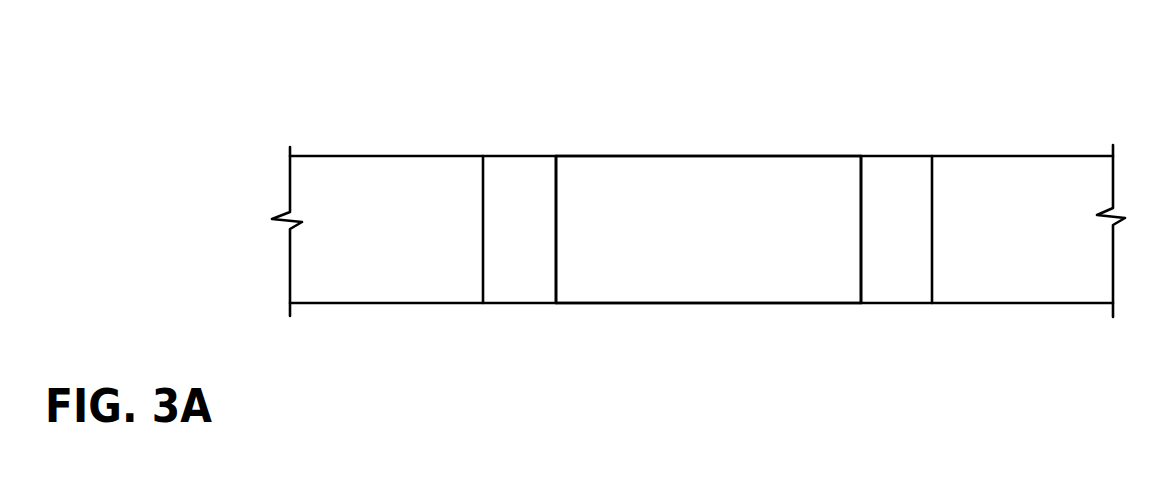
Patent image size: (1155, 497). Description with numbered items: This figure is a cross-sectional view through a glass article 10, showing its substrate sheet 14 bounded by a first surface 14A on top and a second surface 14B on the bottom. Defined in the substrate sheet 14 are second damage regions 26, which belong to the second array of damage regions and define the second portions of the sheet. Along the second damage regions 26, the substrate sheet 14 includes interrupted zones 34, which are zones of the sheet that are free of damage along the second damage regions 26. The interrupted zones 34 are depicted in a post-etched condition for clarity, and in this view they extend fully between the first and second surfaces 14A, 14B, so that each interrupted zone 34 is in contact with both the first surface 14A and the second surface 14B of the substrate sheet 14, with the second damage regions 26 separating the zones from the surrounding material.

The glass article 10 is at (688, 200).
The substrate sheet 14 is at (698, 220).
The first surface 14A is at (441, 156).
The second surface 14B is at (619, 305).
The second damage regions 26 is at (656, 198).
The interrupted zones 34 is at (511, 212).